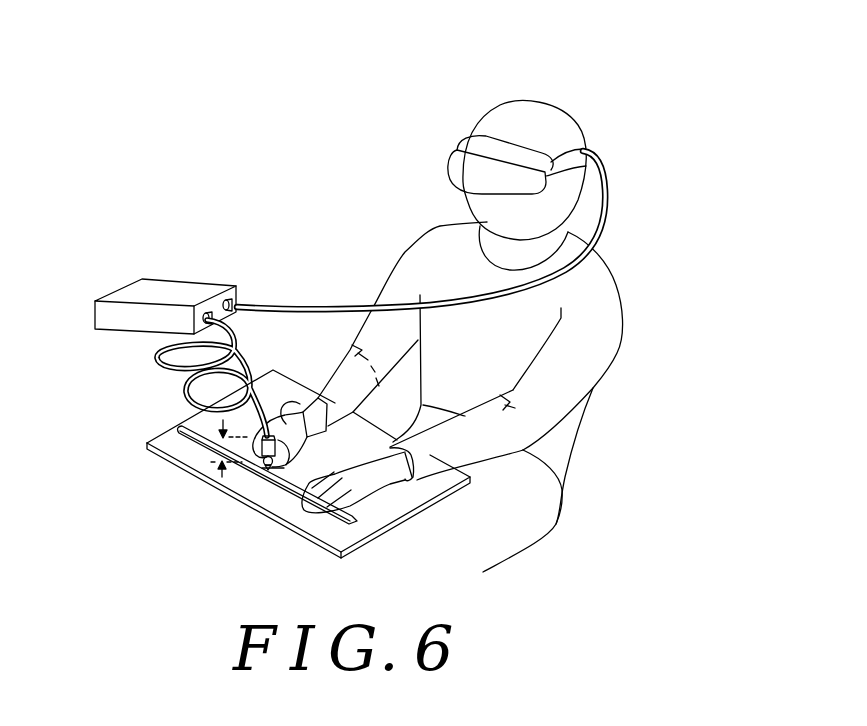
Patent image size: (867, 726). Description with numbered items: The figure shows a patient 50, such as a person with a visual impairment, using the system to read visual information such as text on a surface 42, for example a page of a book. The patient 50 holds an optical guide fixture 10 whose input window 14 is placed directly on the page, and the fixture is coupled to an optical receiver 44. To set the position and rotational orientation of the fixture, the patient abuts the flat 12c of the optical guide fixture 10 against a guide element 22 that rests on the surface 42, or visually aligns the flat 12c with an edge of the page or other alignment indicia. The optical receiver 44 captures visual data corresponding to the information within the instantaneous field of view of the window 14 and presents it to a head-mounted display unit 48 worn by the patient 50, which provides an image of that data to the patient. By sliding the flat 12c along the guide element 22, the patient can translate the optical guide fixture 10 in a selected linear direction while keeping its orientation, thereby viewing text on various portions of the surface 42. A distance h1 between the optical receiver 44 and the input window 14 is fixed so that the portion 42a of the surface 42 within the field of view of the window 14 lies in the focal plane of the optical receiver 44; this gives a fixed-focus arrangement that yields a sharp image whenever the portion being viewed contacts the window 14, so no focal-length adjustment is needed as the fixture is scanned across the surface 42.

The optical guide fixture 10 is at (297, 437).
The input window 14 is at (297, 453).
The flat 12c is at (263, 465).
The guide element 22 is at (182, 426).
The surface 42 is at (394, 496).
The portion of the surface 42a is at (275, 466).
The optical receiver 44 is at (284, 422).
The head-mounted display unit 48 is at (426, 147).
The patient 50 is at (603, 276).
The distance h1 is at (213, 476).